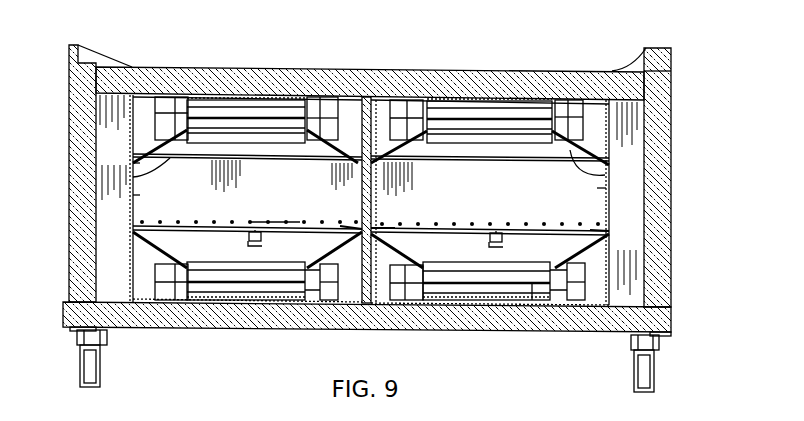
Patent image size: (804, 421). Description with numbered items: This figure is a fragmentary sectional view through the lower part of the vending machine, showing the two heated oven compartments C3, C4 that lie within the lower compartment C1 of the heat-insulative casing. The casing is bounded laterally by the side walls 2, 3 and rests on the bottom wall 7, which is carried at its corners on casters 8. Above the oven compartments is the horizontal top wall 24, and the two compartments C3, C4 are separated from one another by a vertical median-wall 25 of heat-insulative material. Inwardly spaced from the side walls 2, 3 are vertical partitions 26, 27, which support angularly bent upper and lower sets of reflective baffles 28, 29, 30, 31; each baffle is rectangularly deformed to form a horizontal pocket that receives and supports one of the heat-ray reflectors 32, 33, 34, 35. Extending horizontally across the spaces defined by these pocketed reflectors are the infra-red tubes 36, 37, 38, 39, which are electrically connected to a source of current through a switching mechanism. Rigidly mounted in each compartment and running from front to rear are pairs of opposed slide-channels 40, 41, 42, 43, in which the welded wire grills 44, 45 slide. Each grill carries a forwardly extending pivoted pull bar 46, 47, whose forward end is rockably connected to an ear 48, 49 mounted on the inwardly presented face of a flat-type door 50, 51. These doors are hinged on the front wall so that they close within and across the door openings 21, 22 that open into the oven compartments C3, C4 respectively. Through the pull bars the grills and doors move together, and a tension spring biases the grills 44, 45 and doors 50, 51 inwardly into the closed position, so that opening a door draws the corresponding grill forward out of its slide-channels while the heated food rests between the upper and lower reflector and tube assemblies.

The side wall 2 is at (650, 231).
The side wall 3 is at (68, 252).
The bottom wall 7 is at (447, 333).
The casters 8 is at (106, 362).
The door opening 21 is at (606, 173).
The door opening 22 is at (133, 176).
The top wall 24 is at (433, 74).
The median-wall 25 is at (365, 97).
The vertical partition 26 is at (612, 288).
The vertical partition 27 is at (130, 140).
The reflective baffle 28 is at (158, 140).
The reflective baffle 29 is at (343, 140).
The reflective baffle 30 is at (133, 255).
The reflective baffle 31 is at (350, 270).
The heat-ray reflector 32 is at (492, 300).
The heat-ray reflector 33 is at (221, 290).
The heat-ray reflector 34 is at (461, 137).
The heat-ray reflector 35 is at (233, 110).
The infra-red tube 36 is at (532, 300).
The infra-red tube 37 is at (250, 282).
The infra-red tube 38 is at (491, 128).
The infra-red tube 39 is at (268, 110).
The slide-channel 40 is at (600, 224).
The slide-channel 41 is at (380, 227).
The slide-channel 42 is at (358, 225).
The slide-channel 43 is at (140, 222).
The welded wire grill 44 is at (442, 226).
The welded wire grill 45 is at (192, 222).
The pull bar 46 is at (490, 238).
The pull bar 47 is at (248, 237).
The ear 48 is at (512, 224).
The ear 49 is at (273, 222).
The flat-type door 50 is at (600, 197).
The flat-type door 51 is at (303, 175).
The lower compartment C1 is at (133, 163).
The oven compartment C3 is at (597, 188).
The oven compartment C4 is at (137, 195).